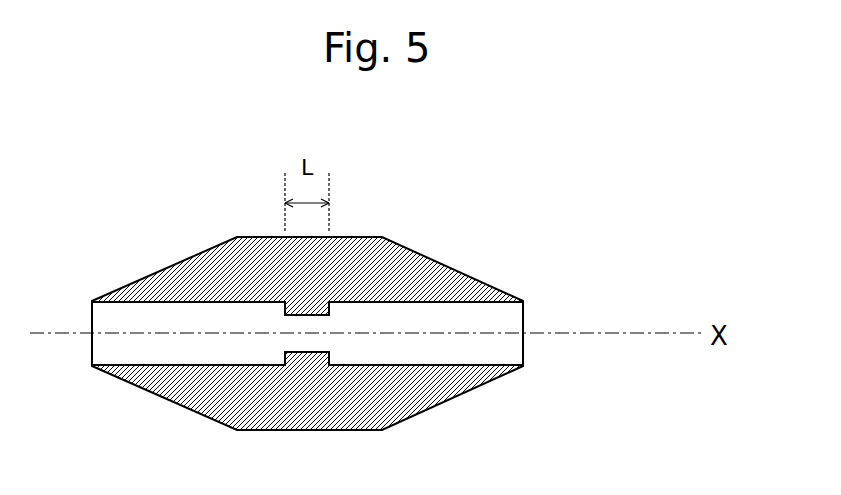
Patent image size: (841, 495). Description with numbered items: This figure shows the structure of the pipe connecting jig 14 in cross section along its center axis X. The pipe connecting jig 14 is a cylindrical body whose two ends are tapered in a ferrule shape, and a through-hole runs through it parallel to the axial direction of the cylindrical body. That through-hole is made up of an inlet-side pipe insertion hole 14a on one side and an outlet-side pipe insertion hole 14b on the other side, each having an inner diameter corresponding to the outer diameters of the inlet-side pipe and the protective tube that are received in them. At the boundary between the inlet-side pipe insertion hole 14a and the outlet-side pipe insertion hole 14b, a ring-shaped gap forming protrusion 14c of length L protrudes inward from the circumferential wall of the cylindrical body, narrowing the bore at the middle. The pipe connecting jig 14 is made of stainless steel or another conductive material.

The pipe connecting jig 14 is at (430, 408).
The inlet-side pipe insertion hole 14a is at (104, 355).
The outlet-side pipe insertion hole 14b is at (518, 358).
The gap forming protrusion 14c is at (350, 430).